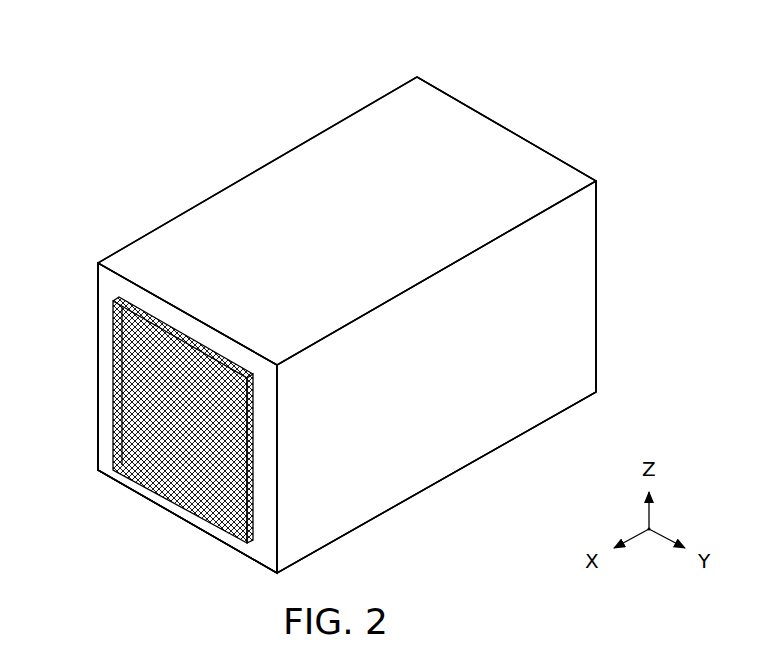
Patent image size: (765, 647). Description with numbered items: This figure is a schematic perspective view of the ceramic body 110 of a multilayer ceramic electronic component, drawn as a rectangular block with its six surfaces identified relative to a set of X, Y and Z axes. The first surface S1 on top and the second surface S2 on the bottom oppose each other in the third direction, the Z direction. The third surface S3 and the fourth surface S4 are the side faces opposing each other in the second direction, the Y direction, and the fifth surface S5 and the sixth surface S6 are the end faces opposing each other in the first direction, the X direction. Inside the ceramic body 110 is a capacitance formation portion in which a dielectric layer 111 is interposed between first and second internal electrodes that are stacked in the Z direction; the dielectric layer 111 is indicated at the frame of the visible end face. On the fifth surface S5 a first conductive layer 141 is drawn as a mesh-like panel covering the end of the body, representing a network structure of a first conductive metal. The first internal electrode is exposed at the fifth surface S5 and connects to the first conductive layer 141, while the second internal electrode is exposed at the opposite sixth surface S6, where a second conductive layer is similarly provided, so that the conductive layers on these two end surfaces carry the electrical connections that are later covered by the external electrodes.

The ceramic body 110 is at (183, 36).
The dielectric layer 111 is at (108, 353).
The first conductive layer 141 is at (140, 428).
The first surface S1 is at (347, 148).
The second surface S2 is at (402, 478).
The third surface S3 is at (498, 405).
The fourth surface S4 is at (198, 221).
The fifth surface S5 is at (165, 478).
The sixth surface S6 is at (512, 151).